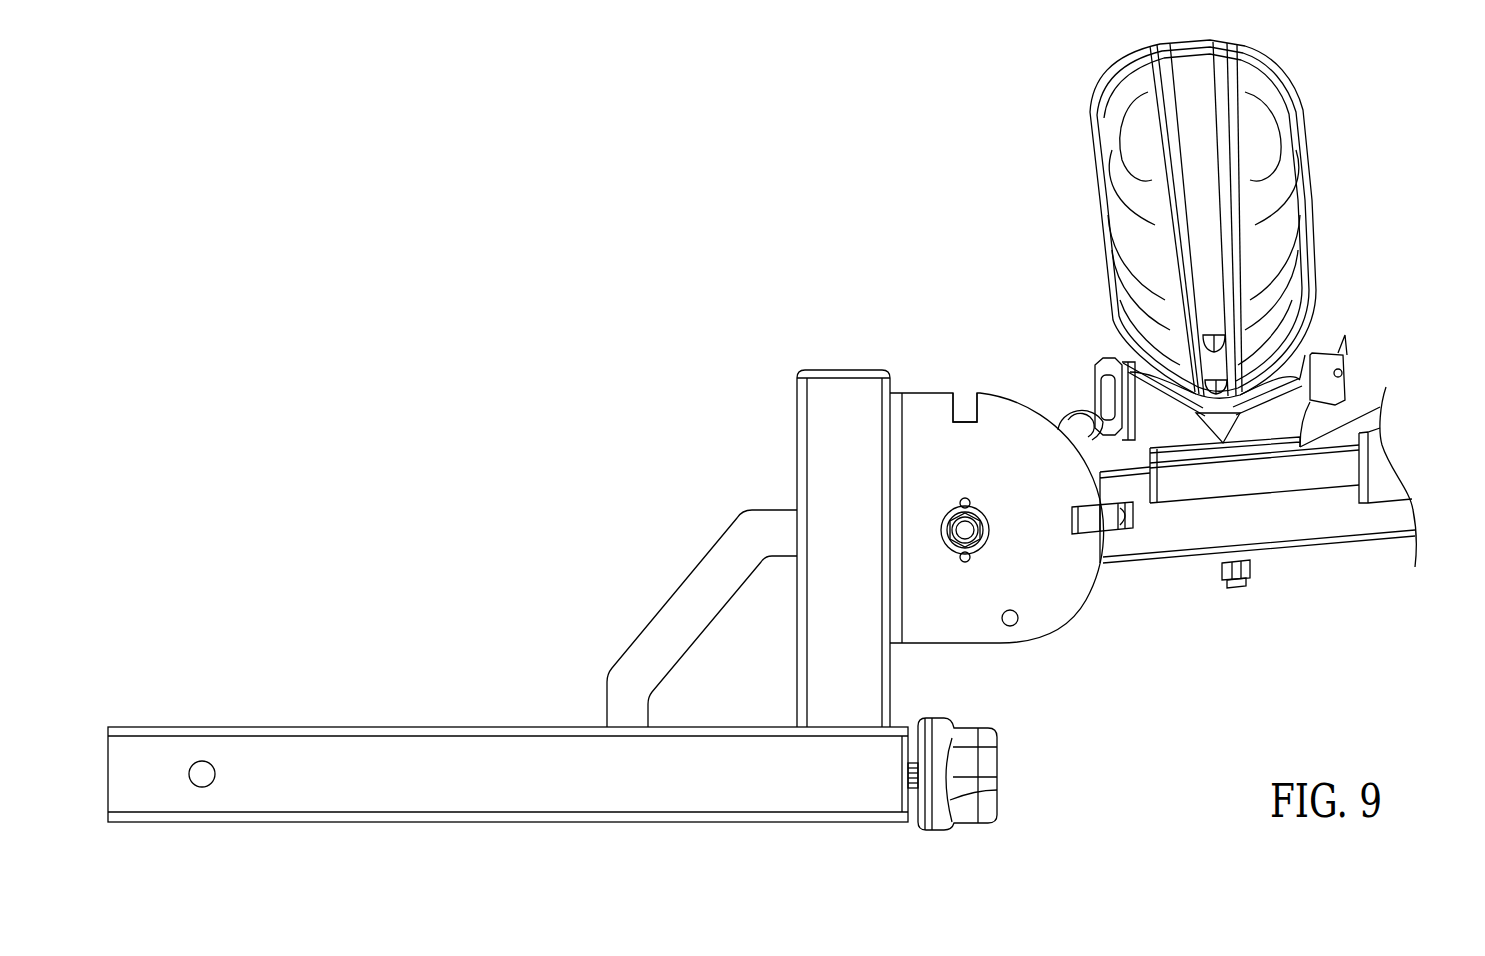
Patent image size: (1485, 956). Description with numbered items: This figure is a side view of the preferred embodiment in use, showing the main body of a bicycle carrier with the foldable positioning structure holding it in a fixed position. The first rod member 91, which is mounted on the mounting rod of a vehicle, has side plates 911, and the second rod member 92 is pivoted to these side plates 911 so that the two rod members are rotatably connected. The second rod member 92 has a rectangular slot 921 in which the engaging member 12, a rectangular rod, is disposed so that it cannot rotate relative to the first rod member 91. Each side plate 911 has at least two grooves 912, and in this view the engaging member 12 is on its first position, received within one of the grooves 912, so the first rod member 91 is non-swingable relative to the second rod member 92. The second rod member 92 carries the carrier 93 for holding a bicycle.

The first rod member 91 is at (283, 748).
The side plate 911 is at (1034, 620).
The groove 912 is at (970, 405).
The second rod member 92 is at (1320, 533).
The slot 921 is at (1108, 530).
The engaging member 12 is at (1087, 534).
The carrier 93 is at (1333, 152).